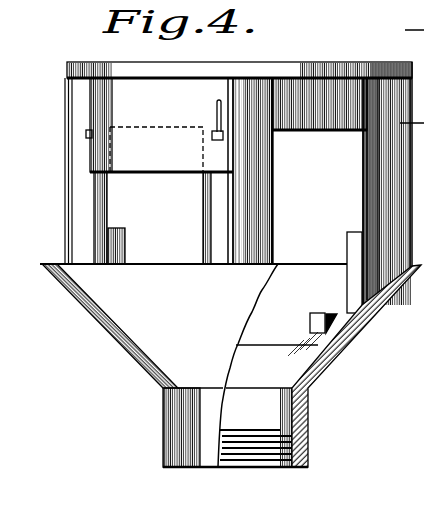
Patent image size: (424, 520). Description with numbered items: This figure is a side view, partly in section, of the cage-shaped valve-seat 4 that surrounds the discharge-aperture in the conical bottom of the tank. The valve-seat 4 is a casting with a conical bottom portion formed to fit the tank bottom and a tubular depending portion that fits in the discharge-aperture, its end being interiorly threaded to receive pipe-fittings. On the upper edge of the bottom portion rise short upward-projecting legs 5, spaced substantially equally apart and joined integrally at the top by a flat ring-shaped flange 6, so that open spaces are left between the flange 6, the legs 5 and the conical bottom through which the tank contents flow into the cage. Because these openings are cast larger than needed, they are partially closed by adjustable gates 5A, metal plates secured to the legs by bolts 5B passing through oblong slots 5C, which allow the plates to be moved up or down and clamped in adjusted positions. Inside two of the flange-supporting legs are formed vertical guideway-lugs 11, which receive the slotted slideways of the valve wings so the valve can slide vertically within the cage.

The valve-seat 4 is at (163, 350).
The upward-projecting legs 5 is at (260, 167).
The adjustable gates 5A is at (147, 163).
The bolts 5B is at (212, 136).
The oblong slots 5C is at (217, 117).
The flat ring-shaped flange 6 is at (263, 69).
The vertical guideway-lugs 11 is at (118, 235).